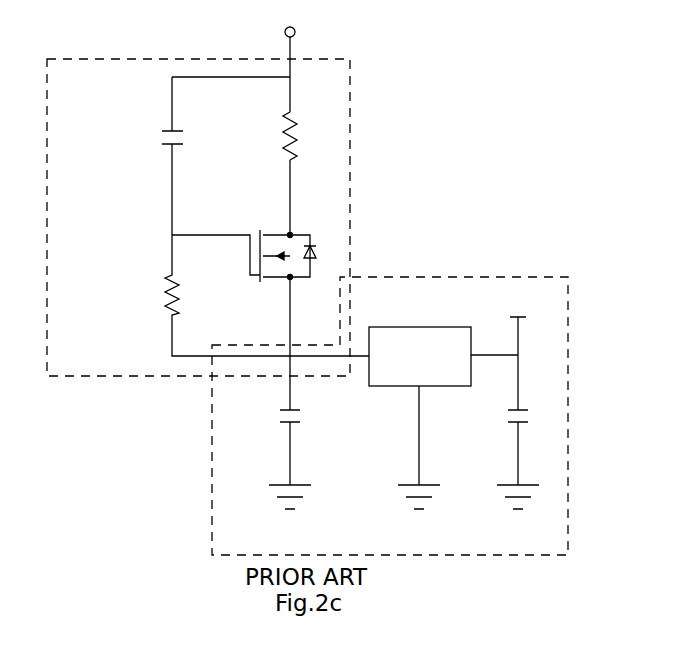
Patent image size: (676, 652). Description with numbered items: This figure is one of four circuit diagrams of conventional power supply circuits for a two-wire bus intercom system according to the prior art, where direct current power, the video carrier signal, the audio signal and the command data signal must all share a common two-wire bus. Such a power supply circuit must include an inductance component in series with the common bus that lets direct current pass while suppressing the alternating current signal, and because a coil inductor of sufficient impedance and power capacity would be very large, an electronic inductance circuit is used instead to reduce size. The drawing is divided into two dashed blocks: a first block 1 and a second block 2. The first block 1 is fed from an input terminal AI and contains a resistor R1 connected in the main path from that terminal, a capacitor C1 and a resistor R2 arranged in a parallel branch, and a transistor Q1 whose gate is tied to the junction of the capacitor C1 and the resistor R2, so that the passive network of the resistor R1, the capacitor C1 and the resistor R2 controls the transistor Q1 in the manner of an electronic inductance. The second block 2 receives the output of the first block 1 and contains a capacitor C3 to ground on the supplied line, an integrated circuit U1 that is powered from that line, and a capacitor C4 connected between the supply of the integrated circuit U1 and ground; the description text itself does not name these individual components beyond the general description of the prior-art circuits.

The input/protection block (prior art) 1 is at (198, 217).
The processing block (prior art) 2 is at (390, 391).
The analog input terminal AI is at (290, 62).
The resistor R1 is at (298, 173).
The capacitor C1 is at (226, 156).
The resistor R2 is at (267, 295).
The MOSFET transistor Q1 is at (253, 310).
The capacitor C3 is at (296, 459).
The integrated circuit U1 is at (443, 418).
The capacitor C4 is at (525, 406).